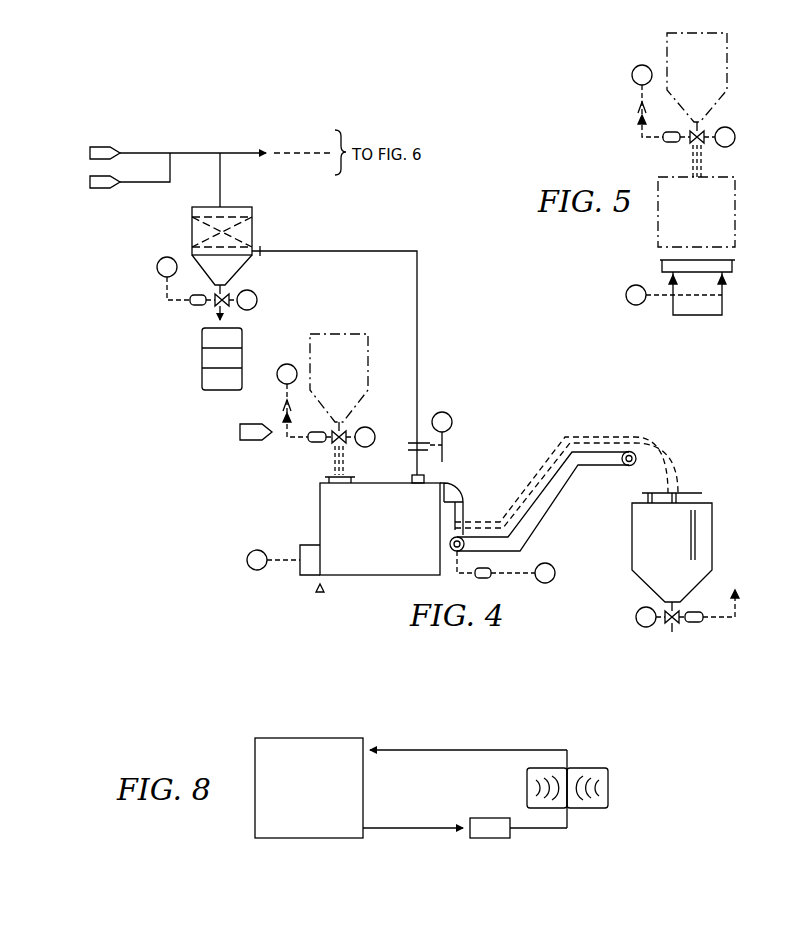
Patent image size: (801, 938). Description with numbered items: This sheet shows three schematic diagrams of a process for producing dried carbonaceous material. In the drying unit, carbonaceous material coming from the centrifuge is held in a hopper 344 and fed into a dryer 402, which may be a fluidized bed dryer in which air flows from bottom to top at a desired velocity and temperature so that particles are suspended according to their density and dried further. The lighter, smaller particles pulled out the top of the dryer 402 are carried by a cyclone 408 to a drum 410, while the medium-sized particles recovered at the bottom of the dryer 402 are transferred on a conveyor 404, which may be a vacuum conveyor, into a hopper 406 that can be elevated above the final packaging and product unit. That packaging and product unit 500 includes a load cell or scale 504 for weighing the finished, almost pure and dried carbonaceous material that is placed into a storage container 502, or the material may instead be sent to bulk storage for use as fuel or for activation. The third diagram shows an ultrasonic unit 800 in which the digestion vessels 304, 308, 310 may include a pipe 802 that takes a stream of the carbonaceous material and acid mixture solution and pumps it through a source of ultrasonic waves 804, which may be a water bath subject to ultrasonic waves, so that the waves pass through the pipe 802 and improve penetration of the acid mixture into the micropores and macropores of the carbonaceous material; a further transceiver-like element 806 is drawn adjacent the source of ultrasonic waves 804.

In FIG. 4, the hopper 344 is at (356, 385).
In FIG. 4, the dryer 402 is at (397, 542).
In FIG. 4, the conveyor 404 is at (548, 510).
In FIG. 4, the hopper 406 is at (693, 503).
In FIG. 5, the hopper 406 is at (714, 86).
In FIG. 4, the cyclone 408 is at (192, 232).
In FIG. 4, the drum 410 is at (202, 362).
In FIG. 5, the packaging and product unit 500 is at (713, 175).
In FIG. 5, the storage container 502 is at (714, 225).
In FIG. 5, the load cell or scale 504 is at (722, 300).
In FIG. 8, the ultrasonic unit 800 is at (465, 759).
In FIG. 8, the pipe 802 is at (404, 827).
In FIG. 8, the source of ultrasonic waves 804 is at (492, 817).
In FIG. 8, the wireless transceiver 806 is at (608, 790).
In FIG. 8, the digestion vessel 304 is at (309, 788).
In FIG. 8, the digestion vessel 308 is at (309, 788).
In FIG. 8, the digestion vessel 310 is at (348, 784).